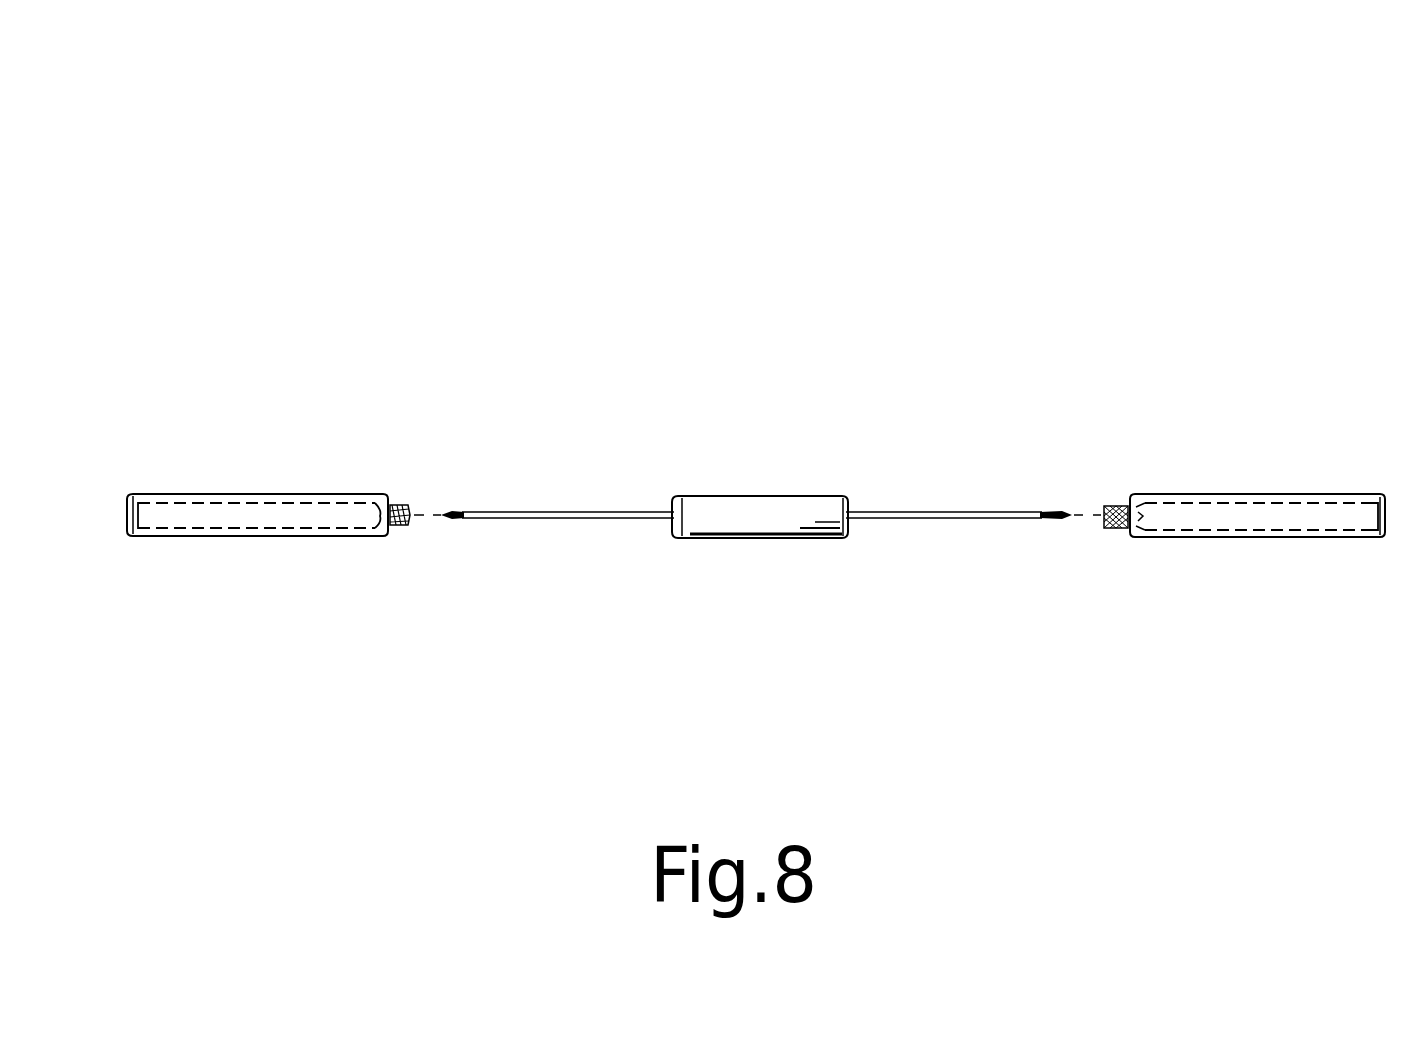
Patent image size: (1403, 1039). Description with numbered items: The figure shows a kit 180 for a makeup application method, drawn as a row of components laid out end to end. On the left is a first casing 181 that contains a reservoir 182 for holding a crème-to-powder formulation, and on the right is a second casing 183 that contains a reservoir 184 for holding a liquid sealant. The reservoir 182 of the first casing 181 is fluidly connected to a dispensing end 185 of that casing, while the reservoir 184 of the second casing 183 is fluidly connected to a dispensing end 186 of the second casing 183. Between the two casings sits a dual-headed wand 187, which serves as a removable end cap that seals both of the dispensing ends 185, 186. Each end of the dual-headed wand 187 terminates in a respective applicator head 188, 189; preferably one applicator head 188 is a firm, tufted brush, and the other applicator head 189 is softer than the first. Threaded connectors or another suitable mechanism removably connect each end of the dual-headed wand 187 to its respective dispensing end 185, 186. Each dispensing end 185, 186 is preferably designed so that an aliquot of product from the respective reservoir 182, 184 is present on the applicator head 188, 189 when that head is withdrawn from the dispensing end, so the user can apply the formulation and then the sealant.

The kit 180 is at (712, 196).
The first casing 181 is at (338, 496).
The reservoir 182 is at (232, 501).
The second casing 183 is at (1220, 503).
The reservoir 184 is at (1308, 504).
The dispensing end 185 is at (412, 494).
The dispensing end 186 is at (1110, 494).
The dual-headed wand 187 is at (757, 496).
The applicator head 188 is at (452, 518).
The applicator head 189 is at (1060, 519).